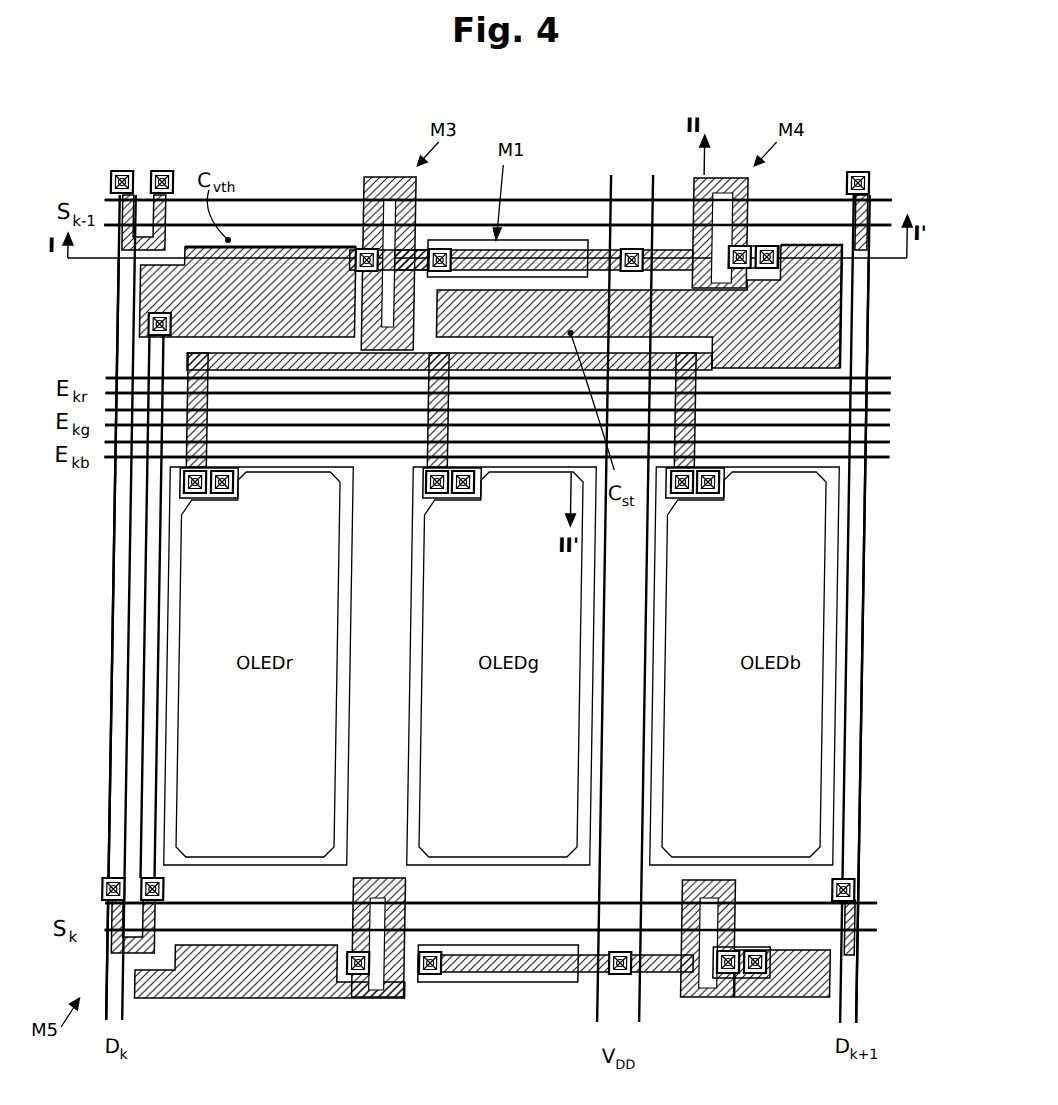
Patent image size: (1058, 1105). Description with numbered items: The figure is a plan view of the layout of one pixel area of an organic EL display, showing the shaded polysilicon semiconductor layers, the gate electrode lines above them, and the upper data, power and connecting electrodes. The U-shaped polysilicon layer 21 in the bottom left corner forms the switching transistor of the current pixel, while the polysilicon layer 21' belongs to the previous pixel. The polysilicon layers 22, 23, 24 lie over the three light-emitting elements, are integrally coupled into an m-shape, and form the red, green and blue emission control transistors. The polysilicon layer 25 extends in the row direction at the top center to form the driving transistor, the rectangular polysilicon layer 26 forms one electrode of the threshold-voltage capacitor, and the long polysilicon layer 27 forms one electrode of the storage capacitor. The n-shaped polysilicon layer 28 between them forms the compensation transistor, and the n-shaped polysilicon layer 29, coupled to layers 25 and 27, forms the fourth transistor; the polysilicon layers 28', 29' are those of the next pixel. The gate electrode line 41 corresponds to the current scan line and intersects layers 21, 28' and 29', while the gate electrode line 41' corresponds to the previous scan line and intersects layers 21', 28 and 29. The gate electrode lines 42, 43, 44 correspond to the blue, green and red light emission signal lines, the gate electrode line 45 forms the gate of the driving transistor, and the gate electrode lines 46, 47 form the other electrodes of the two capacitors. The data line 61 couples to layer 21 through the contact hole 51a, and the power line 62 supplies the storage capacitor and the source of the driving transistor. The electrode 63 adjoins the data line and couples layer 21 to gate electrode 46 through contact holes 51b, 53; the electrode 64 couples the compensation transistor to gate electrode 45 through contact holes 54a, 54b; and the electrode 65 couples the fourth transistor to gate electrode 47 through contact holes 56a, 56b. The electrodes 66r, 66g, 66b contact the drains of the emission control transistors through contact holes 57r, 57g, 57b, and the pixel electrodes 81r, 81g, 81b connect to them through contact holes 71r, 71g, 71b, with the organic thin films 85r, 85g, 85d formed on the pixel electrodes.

The polysilicon layer 21 is at (106, 935).
The polysilicon layer 21' is at (124, 226).
The polysilicon layer 22 is at (212, 398).
The polysilicon layer 23 is at (452, 398).
The polysilicon layer 24 is at (700, 398).
The polysilicon layer 25 is at (560, 252).
The polysilicon layer 26 is at (147, 295).
The polysilicon layer 27 is at (838, 314).
The polysilicon layer 28 is at (388, 248).
The polysilicon layer 28' is at (404, 937).
The polysilicon layer 29 is at (720, 217).
The polysilicon layer 29' is at (733, 938).
The gate electrode line 41 is at (513, 919).
The gate electrode line 41' is at (514, 210).
The gate electrode line 42 is at (885, 452).
The gate electrode line 43 is at (885, 420).
The gate electrode line 44 is at (885, 390).
The gate electrode line 45 is at (520, 240).
The gate electrode line 46 is at (262, 247).
The gate electrode line 47 is at (846, 290).
The contact hole 51a is at (117, 890).
The contact hole 51b is at (158, 878).
The contact hole 53 is at (153, 325).
The contact hole 54a is at (362, 250).
The contact hole 54b is at (446, 248).
The contact hole 56a is at (744, 245).
The contact hole 56b is at (773, 245).
The contact hole 57r is at (203, 498).
The contact hole 57g is at (445, 498).
The contact hole 57b is at (690, 498).
The data line 61 is at (87, 639).
The power line 62 is at (667, 700).
The electrode 63 is at (180, 700).
The electrode 64 is at (420, 248).
The electrode 65 is at (784, 245).
The electrode 66r is at (232, 498).
The electrode 66g is at (473, 498).
The electrode 66b is at (718, 498).
The contact hole 71r is at (230, 498).
The contact hole 71g is at (472, 498).
The contact hole 71b is at (717, 498).
The pixel electrode 81r is at (194, 740).
The pixel electrode 81g is at (435, 740).
The pixel electrode 81b is at (680, 740).
The red organic thin film 85r is at (196, 770).
The green organic thin film 85g is at (437, 770).
The blue emission region opening 85d is at (682, 770).